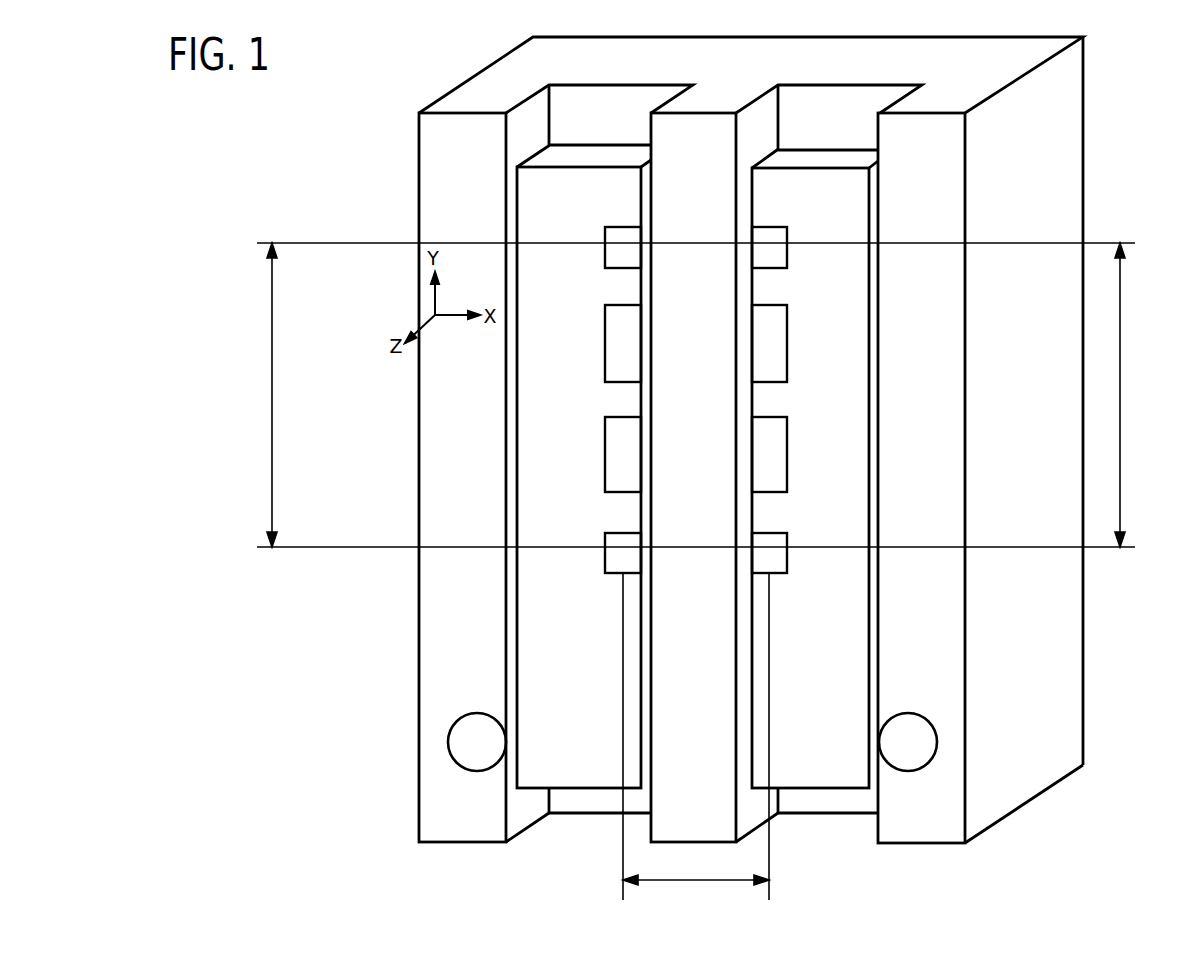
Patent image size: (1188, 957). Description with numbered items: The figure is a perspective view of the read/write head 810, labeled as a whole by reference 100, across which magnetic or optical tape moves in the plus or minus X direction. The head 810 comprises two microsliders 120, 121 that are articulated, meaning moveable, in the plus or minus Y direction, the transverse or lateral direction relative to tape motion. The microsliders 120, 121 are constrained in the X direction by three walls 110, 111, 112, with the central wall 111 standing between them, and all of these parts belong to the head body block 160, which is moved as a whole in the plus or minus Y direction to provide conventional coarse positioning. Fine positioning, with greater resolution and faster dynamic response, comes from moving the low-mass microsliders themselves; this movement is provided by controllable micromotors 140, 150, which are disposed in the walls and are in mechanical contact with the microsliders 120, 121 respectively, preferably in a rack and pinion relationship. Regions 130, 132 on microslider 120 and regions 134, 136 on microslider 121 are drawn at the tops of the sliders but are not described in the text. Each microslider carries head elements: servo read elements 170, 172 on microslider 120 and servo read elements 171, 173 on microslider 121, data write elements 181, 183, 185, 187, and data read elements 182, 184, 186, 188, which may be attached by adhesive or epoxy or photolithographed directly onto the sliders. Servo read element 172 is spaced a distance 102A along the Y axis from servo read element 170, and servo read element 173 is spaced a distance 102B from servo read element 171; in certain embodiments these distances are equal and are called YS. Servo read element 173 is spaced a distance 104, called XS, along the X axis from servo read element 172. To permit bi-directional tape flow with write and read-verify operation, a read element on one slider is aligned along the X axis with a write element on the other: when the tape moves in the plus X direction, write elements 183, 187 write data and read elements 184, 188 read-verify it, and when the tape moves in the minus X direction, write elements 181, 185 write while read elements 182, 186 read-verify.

The tape head 100 is at (603, 111).
The wall 110 is at (445, 151).
The wall 111 is at (676, 151).
The wall 112 is at (905, 151).
The microslider 120 is at (558, 198).
The microslider 121 is at (795, 198).
The first module closure 130 is at (538, 148).
The first module top surface 132 is at (577, 153).
The second module closure 134 is at (763, 148).
The second module top surface 136 is at (797, 163).
The micromotor 140 is at (461, 752).
The micromotor 150 is at (892, 752).
The head body block 160 is at (1068, 110).
The servo read element 170 is at (605, 250).
The servo read element 171 is at (789, 247).
The servo read element 172 is at (605, 545).
The servo read element 173 is at (787, 545).
The data write element 181 is at (787, 318).
The data read element 182 is at (605, 318).
The data write element 183 is at (605, 363).
The data read element 184 is at (787, 363).
The data write element 185 is at (787, 433).
The data read element 186 is at (605, 433).
The data write element 187 is at (605, 480).
The data read element 188 is at (787, 480).
The distance 102A is at (674, 395).
The distance 102B is at (1145, 395).
The distance 104 is at (696, 741).
The read/write head 810 is at (342, 808).